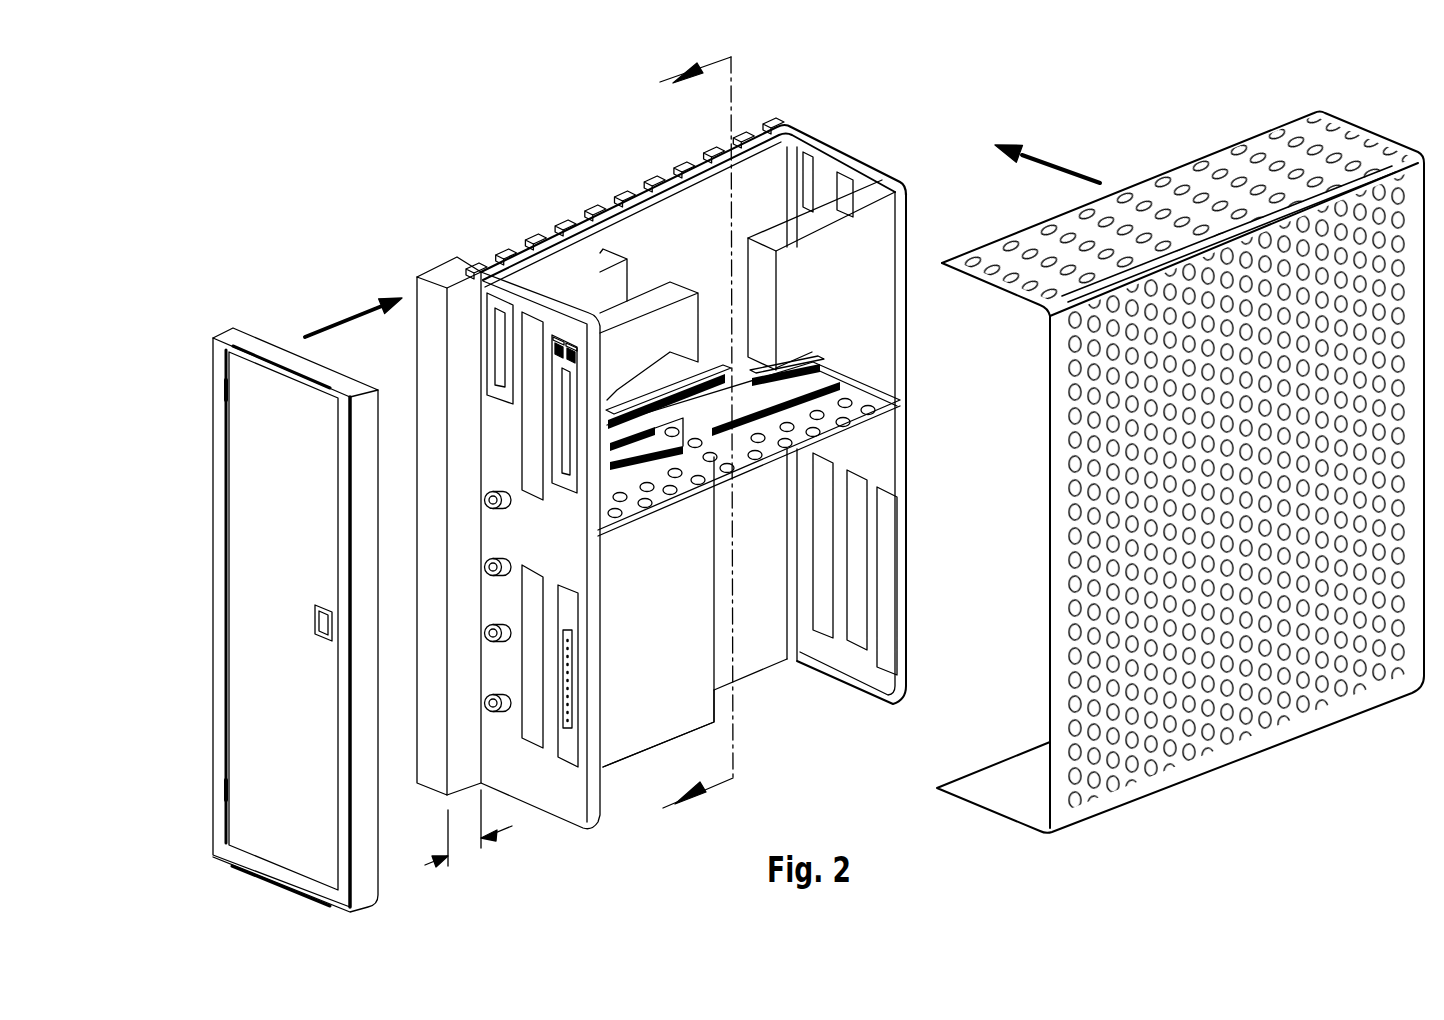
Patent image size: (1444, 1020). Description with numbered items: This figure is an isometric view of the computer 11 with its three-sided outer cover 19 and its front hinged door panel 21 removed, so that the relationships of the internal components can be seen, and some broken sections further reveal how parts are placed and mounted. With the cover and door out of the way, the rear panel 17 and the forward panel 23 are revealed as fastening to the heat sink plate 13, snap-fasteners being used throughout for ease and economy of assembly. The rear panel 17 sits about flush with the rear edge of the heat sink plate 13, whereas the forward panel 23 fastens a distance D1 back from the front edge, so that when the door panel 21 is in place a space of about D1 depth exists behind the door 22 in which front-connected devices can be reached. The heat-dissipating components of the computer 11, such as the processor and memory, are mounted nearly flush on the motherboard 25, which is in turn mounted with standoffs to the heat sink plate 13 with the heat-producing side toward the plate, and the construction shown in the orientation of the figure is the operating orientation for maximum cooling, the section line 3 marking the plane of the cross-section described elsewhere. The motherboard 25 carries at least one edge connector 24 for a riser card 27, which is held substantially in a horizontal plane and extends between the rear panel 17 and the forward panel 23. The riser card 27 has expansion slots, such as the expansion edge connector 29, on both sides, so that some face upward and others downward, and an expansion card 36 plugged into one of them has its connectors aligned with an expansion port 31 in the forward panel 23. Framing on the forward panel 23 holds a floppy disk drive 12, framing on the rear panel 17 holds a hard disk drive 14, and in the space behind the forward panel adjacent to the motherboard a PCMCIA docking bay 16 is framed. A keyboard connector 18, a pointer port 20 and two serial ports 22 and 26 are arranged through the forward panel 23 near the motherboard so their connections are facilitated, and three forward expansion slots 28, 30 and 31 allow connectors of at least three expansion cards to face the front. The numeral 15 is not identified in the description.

The section line 3- 3 is at (684, 441).
The computer 11 is at (476, 116).
The floppy disk drive 12 is at (641, 303).
The heat sink plate 13 is at (550, 198).
The hard disk drive 14 is at (870, 270).
The top rail 15 is at (651, 165).
The PCMCIA docking bay 16 is at (606, 258).
The rear panel 17 is at (878, 170).
The keyboard connector 18 is at (489, 493).
The three-sided outer cover 19 is at (1172, 175).
The pointer port 20 is at (491, 560).
The front hinged door panel 21 is at (200, 405).
The serial port 22 is at (240, 700).
The forward panel 23 is at (593, 620).
The edge connector 24 is at (623, 408).
The motherboard 25 is at (763, 182).
The serial port 26 is at (491, 696).
The riser card 27 is at (633, 530).
The forward expansion slot 28 is at (527, 417).
The expansion edge connector 29 is at (882, 386).
The forward expansion slot 30 is at (530, 724).
The expansion port 31 is at (568, 748).
The expansion card 36 is at (640, 708).
The distance D1 is at (454, 834).